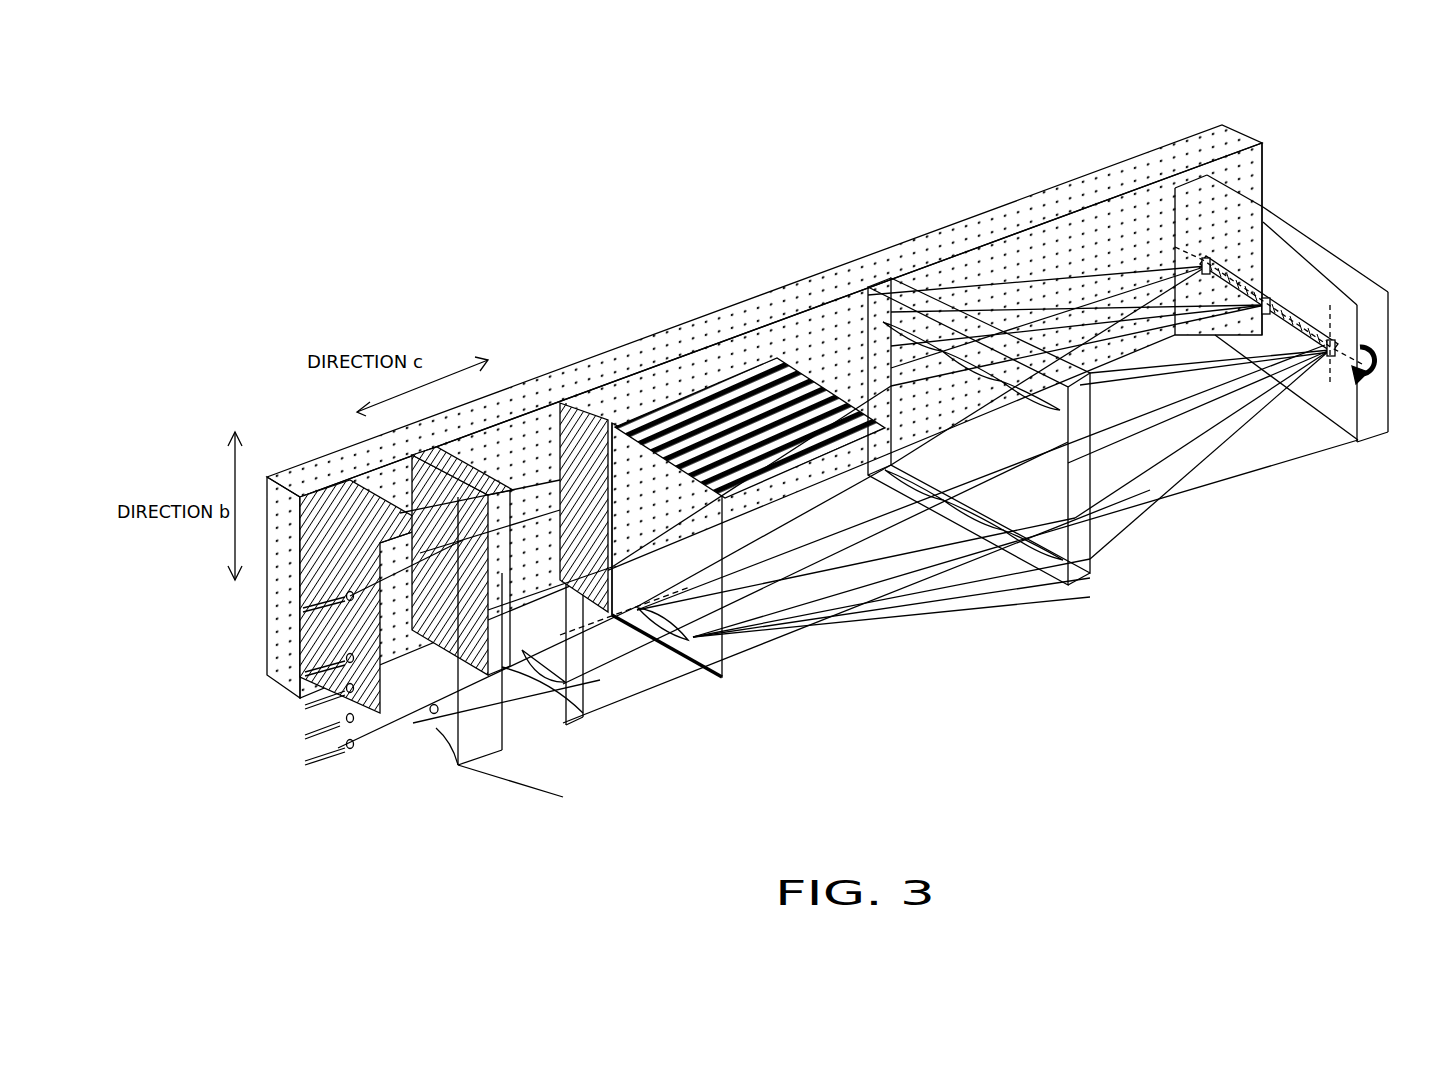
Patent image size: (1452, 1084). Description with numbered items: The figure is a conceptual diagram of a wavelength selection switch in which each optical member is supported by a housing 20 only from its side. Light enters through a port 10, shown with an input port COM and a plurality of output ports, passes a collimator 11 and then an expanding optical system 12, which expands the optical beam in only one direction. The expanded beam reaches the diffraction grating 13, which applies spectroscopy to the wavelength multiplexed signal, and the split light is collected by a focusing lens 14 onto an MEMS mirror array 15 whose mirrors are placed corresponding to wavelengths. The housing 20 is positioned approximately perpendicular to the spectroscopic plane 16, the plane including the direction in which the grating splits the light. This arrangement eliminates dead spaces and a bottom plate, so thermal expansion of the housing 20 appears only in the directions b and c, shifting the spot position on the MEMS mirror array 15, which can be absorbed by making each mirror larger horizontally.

The port 10 is at (318, 760).
The collimator 11 is at (358, 752).
The expanding optical system 12 is at (568, 684).
The diffraction grating 13 is at (723, 670).
The focusing lens 14 is at (1025, 583).
The MEMS mirror array 15 is at (1327, 373).
The spectroscopic plane 16 is at (778, 358).
The housing 20 is at (643, 337).